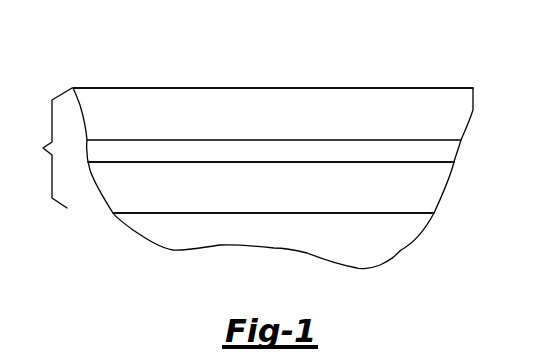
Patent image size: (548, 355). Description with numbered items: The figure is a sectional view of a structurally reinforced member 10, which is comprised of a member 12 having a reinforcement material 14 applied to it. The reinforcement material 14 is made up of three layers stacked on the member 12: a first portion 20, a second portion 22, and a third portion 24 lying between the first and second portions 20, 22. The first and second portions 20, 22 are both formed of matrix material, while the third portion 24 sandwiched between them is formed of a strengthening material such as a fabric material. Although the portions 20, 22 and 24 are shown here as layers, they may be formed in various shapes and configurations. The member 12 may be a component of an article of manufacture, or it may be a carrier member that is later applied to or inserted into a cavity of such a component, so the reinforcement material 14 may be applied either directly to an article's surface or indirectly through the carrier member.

The structurally reinforced member 10 is at (407, 63).
The member 12 is at (404, 236).
The reinforcement material 14 is at (47, 148).
The first portion 20 is at (133, 98).
The second portion 22 is at (293, 183).
The third portion 24 is at (215, 147).